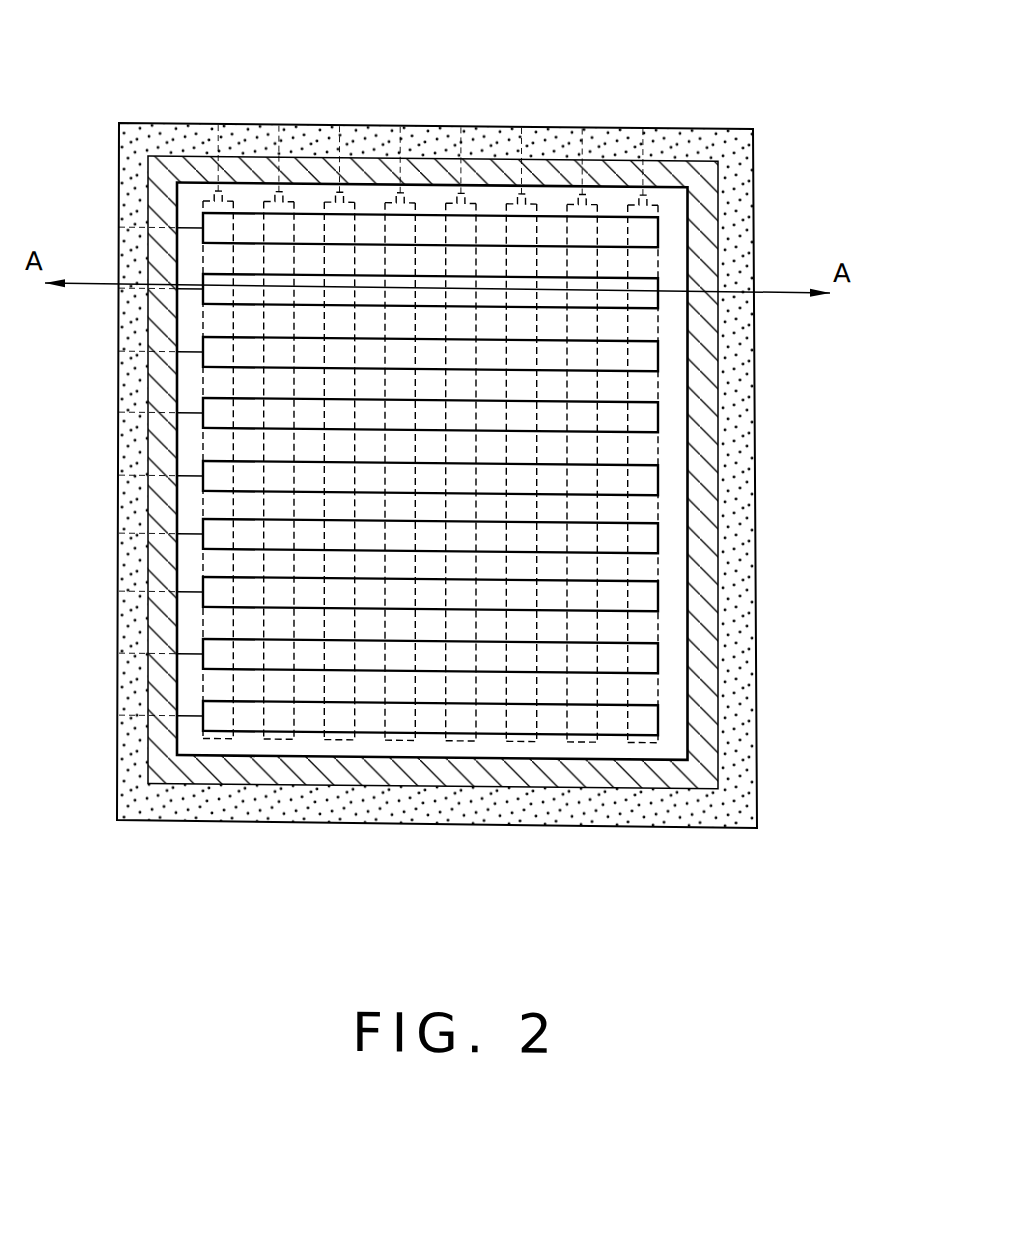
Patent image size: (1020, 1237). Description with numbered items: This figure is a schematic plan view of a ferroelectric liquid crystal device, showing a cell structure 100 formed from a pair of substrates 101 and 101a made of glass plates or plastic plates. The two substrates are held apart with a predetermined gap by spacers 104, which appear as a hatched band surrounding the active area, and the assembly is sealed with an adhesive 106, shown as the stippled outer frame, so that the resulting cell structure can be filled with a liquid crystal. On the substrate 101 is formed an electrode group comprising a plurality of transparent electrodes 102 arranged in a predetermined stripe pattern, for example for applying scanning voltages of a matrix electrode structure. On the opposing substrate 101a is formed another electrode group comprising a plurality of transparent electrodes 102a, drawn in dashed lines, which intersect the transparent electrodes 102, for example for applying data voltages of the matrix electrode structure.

The cell structure 100 is at (518, 108).
The substrate 101 is at (515, 416).
The substrate 101a is at (668, 234).
The transparent electrodes 102 is at (647, 325).
The transparent electrodes 102a is at (312, 206).
The spacers 104 is at (677, 164).
The adhesive 106 is at (732, 661).